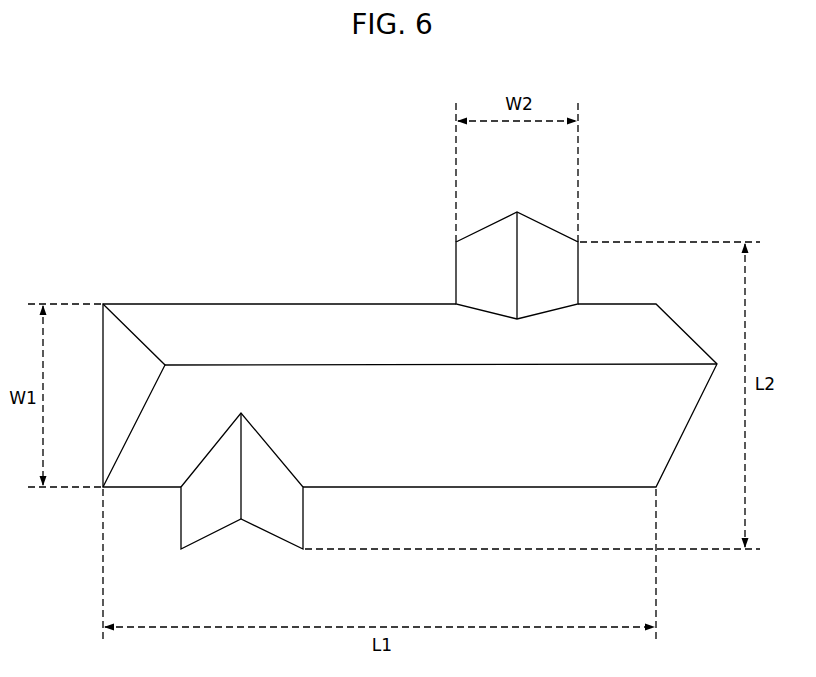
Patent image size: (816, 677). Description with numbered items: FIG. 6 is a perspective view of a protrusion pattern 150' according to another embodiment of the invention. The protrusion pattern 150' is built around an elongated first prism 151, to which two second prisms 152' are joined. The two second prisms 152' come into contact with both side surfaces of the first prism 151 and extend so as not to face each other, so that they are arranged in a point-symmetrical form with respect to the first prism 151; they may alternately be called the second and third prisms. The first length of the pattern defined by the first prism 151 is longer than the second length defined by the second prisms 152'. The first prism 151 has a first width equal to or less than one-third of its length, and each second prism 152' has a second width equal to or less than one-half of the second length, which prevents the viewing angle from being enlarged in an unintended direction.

The protrusion pattern 150' is at (401, 380).
The first prism 151 is at (256, 304).
The second prisms 152' is at (379, 387).